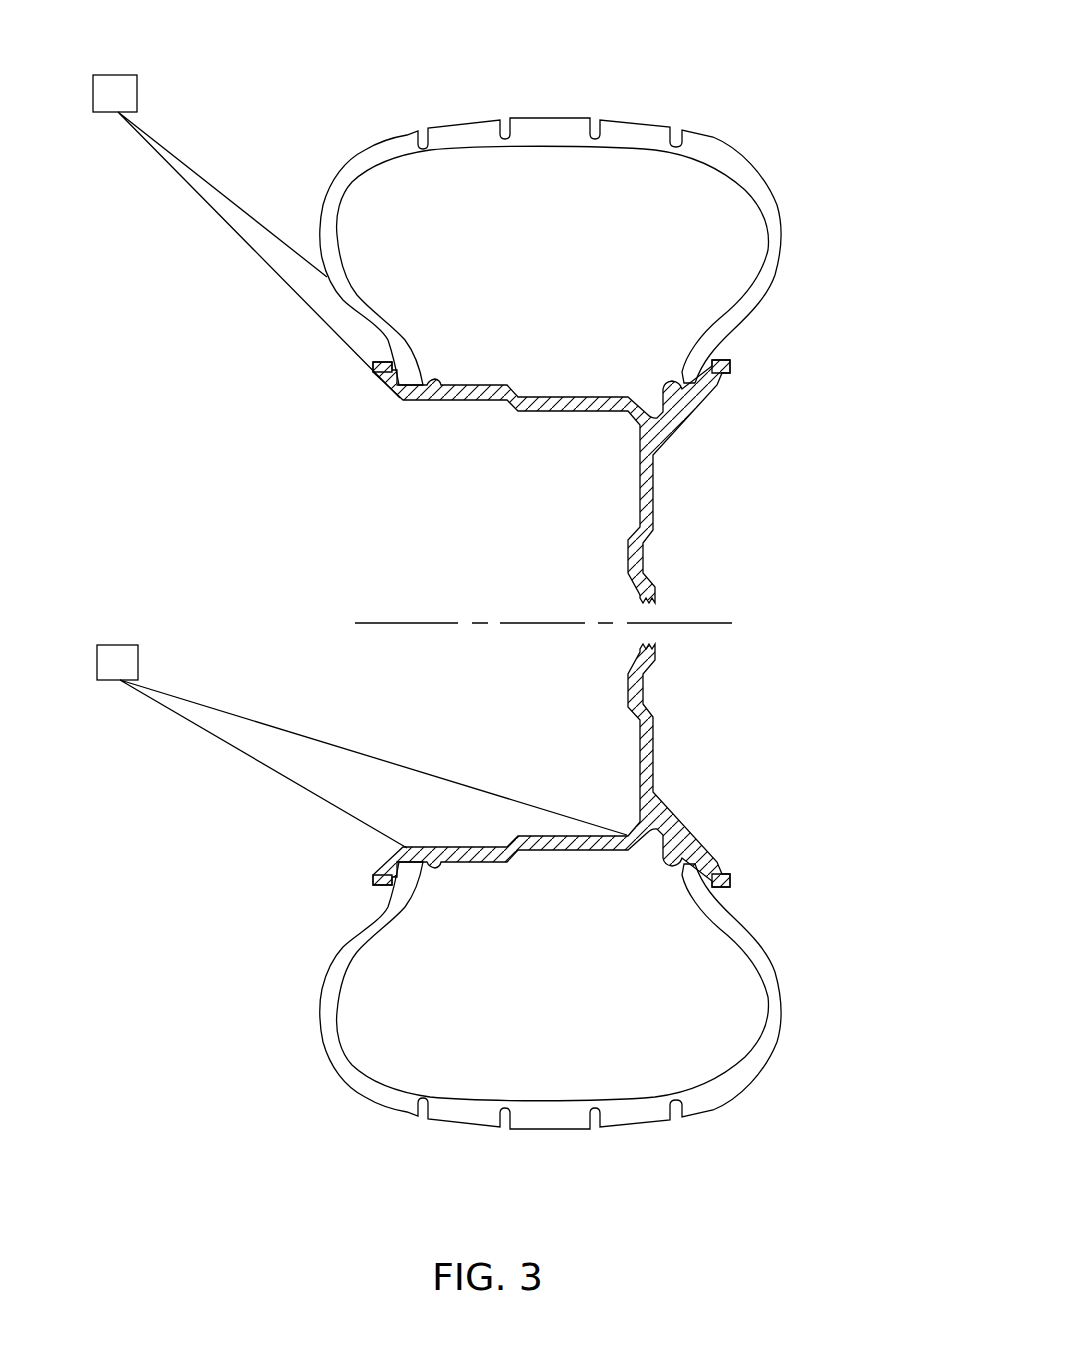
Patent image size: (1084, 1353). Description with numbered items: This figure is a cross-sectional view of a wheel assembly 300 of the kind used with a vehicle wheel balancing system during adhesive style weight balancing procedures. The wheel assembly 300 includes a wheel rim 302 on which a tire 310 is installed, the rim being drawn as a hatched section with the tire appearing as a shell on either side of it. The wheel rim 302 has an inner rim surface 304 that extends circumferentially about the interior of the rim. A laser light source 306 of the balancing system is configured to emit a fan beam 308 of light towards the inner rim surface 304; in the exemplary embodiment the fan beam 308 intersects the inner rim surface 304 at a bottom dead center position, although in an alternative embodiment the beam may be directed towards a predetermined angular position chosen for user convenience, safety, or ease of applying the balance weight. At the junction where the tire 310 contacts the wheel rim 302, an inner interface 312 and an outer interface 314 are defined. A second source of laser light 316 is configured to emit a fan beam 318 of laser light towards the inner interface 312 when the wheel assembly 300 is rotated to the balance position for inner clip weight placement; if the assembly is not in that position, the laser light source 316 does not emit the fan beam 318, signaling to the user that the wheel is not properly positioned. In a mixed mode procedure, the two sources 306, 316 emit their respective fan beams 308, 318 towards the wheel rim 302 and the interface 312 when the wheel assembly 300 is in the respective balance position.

The wheel assembly 300 is at (905, 276).
The wheel rim 302 is at (608, 393).
The inner rim surface 304 is at (420, 845).
The laser light source 306 is at (118, 645).
The fan beam 308 is at (305, 758).
The tire 310 is at (778, 245).
The inner interface 312 is at (393, 365).
The right rim flange / bead seat 314 is at (712, 360).
The source of laser light 316 is at (113, 75).
The fan beam 318 is at (233, 219).